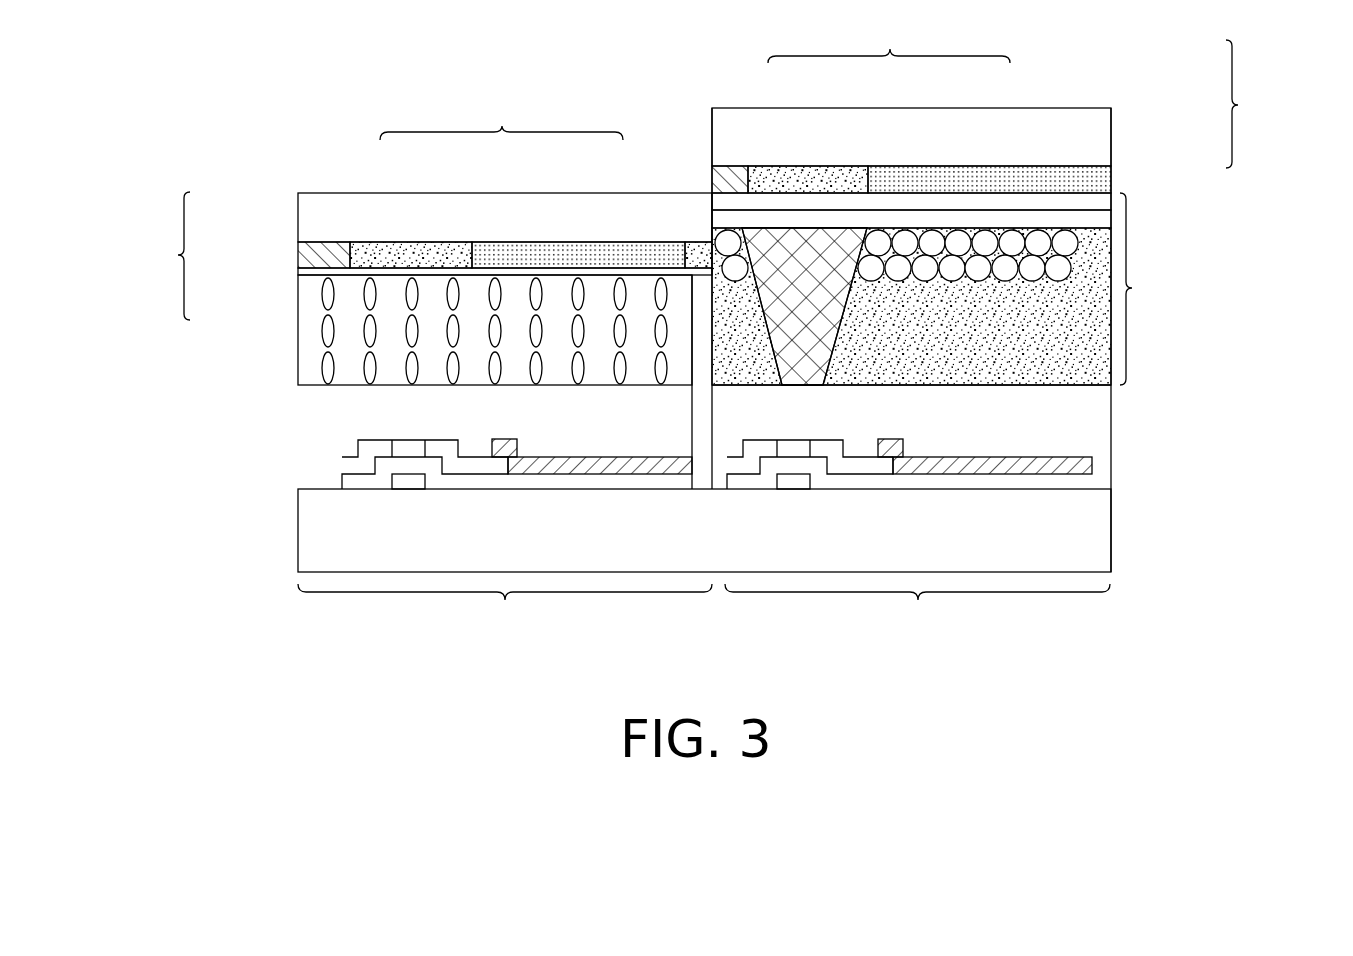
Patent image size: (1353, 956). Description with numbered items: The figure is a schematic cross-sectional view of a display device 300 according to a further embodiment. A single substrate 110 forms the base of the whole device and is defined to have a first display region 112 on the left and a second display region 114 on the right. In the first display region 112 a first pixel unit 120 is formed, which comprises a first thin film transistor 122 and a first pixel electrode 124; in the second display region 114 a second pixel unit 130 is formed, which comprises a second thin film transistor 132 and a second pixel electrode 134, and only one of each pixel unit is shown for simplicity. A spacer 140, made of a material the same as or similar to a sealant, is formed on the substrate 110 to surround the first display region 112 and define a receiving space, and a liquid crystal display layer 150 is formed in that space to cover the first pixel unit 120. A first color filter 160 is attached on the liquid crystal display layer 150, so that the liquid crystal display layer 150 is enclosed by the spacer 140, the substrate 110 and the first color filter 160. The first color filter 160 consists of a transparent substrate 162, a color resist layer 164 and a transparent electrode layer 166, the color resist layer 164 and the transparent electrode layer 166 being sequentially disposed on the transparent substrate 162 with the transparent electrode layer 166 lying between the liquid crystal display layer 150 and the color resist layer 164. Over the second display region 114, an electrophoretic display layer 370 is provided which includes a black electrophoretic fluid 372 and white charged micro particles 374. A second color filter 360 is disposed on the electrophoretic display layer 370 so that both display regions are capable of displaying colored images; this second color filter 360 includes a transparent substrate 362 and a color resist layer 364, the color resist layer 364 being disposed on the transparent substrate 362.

The substrate 110 is at (1085, 540).
The first display region 112 is at (505, 606).
The second display region 114 is at (917, 606).
The first pixel unit 120 is at (501, 112).
The first thin film transistor 122 is at (405, 430).
The first pixel electrode 124 is at (580, 457).
The second pixel unit 130 is at (889, 36).
The second thin film transistor 132 is at (795, 420).
The second pixel electrode 134 is at (968, 457).
The spacer 140 is at (704, 282).
The liquid crystal display layer 150 is at (297, 348).
The first color filter 160 is at (155, 256).
The transparent substrate 162 is at (297, 212).
The color resist layer 164 is at (297, 252).
The transparent electrode layer 166 is at (296, 274).
The display device 300 is at (1297, 613).
The second color filter 360 is at (1261, 104).
The transparent substrate 362 is at (1088, 137).
The color resist layer 364 is at (1113, 182).
The electrophoretic display layer 370 is at (955, 302).
The black electrophoretic fluid 372 is at (1073, 367).
The white charged micro particles 374 is at (1037, 240).